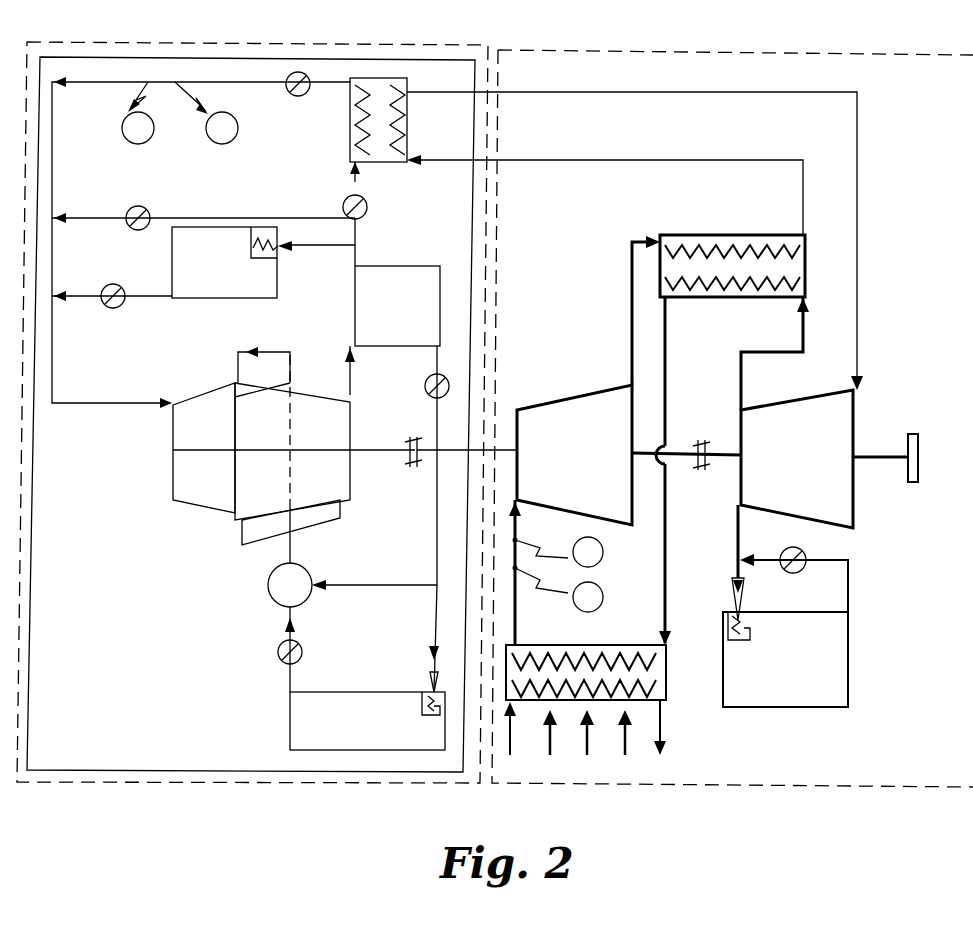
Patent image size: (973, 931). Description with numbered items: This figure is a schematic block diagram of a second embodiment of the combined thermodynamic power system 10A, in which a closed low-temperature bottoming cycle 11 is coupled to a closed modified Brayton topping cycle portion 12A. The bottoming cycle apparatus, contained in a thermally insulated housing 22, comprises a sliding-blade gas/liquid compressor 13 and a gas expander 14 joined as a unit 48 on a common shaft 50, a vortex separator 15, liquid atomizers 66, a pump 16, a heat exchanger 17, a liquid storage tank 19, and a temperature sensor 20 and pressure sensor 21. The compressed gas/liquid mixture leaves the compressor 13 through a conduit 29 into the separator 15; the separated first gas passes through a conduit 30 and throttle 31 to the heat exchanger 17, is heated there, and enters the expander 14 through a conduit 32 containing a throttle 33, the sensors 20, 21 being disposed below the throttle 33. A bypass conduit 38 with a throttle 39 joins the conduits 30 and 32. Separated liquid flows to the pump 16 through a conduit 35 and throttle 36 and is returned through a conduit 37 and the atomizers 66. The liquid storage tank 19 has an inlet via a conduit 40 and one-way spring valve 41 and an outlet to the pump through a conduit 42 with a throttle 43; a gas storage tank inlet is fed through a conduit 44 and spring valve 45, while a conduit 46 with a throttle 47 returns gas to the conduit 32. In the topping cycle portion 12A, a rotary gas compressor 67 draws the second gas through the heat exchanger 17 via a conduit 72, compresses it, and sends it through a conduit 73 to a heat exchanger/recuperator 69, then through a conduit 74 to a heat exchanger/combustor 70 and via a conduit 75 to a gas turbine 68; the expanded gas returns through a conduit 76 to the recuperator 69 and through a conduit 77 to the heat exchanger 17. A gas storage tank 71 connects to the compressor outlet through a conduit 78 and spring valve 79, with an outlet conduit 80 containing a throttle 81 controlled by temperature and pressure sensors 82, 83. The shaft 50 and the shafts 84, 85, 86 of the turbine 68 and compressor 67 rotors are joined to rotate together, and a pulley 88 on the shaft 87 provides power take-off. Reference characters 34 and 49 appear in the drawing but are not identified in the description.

The power system 10A is at (489, 46).
The bottoming cycle 11 is at (222, 44).
The closed topping cycle portion 12A is at (699, 50).
The sliding-blade gas/liquid compressor 13 is at (352, 425).
The gas expander 14 is at (172, 468).
The vortex separator 15 is at (389, 267).
The pump 16 is at (268, 580).
The heat exchanger 17 is at (400, 163).
The liquid storage tank 19 is at (290, 727).
The temperature sensor 20 is at (125, 140).
The pressure sensor 21 is at (210, 140).
The thermally insulated housing 22 is at (283, 59).
The conduit 29 is at (350, 372).
The conduit 30 is at (355, 182).
The throttle 31 is at (343, 207).
The conduit 32 is at (52, 345).
The throttle 33 is at (292, 96).
The bypass line 34 is at (236, 362).
The conduit 35 is at (437, 505).
The throttle 36 is at (425, 392).
The conduit 37 is at (293, 545).
The bypass conduit 38 is at (200, 218).
The throttle 39 is at (128, 210).
The conduit 40 is at (434, 600).
The one-way spring valve 41 is at (428, 688).
The conduit 42 is at (288, 680).
The throttle 43 is at (280, 645).
The conduit 44 is at (336, 250).
The one-way spring valve 45 is at (278, 252).
The conduit 46 is at (160, 296).
The throttle 47 is at (104, 286).
The gas/liquid compressor and gas expander unit 48 is at (220, 517).
The shaft 49 is at (185, 446).
The common shaft 50 is at (378, 456).
The liquid atomizers 66 is at (265, 535).
The rotary gas compressor 67 is at (862, 420).
The gas turbine 68 is at (553, 396).
The heat exchanger/recuperator 69 is at (698, 298).
The heat exchanger/combustor 70 is at (672, 668).
The gas storage tank 71 is at (852, 655).
The conduit 72 is at (636, 92).
The conduit 73 is at (738, 380).
The conduit 74 is at (686, 437).
The conduit 75 is at (522, 530).
The conduit 76 is at (630, 325).
The conduit 77 is at (640, 163).
The conduit 78 is at (735, 548).
The one-way spring valve 79 is at (732, 600).
The conduit 80 is at (850, 582).
The throttle 81 is at (790, 574).
The temperature sensor 82 is at (604, 552).
The pressure sensor 83 is at (604, 600).
The shaft 84 is at (498, 440).
The shaft 85 is at (652, 456).
The shaft 86 is at (724, 450).
The shaft 87 is at (868, 462).
The pulley 88 is at (920, 470).